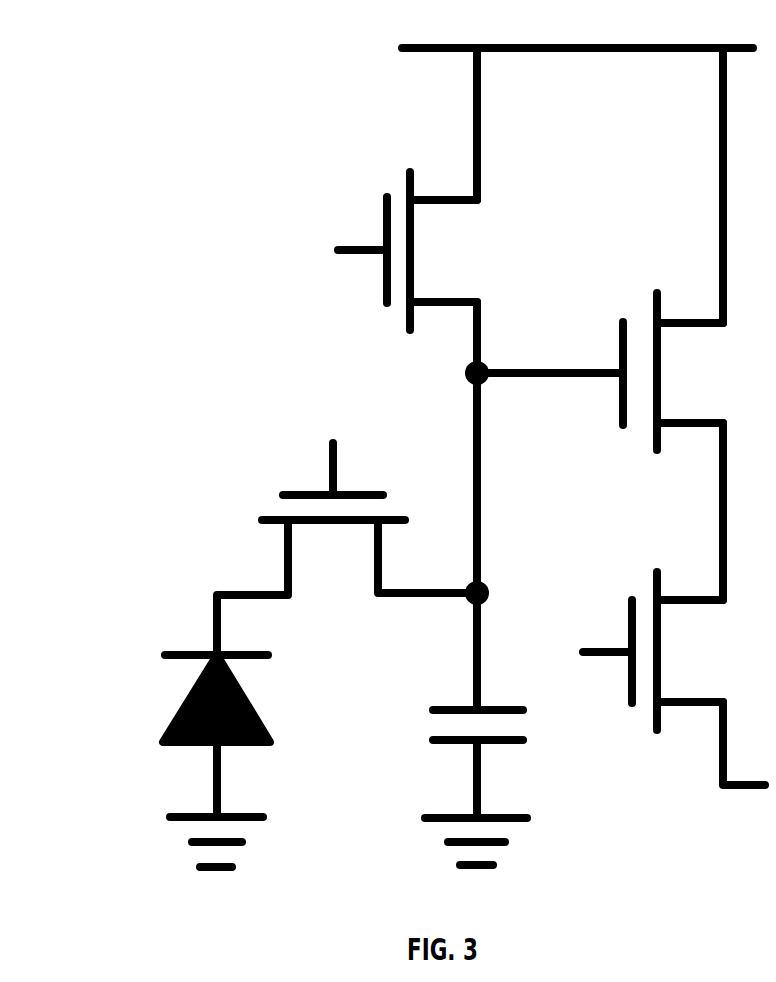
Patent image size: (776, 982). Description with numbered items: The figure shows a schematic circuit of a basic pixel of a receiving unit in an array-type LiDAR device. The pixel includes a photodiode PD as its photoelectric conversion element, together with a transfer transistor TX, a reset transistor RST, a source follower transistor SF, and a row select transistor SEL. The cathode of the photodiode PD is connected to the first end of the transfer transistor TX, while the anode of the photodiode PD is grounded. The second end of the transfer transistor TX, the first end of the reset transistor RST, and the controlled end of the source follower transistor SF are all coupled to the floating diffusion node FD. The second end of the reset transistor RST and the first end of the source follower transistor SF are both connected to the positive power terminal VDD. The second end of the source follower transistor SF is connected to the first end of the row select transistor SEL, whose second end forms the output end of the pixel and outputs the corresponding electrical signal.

The positive power terminal VDD is at (502, 177).
The reset transistor RST is at (317, 251).
The source follower transistor SF is at (600, 400).
The row select transistor SEL is at (654, 633).
The transfer transistor TX is at (347, 503).
The photodiode PD is at (174, 716).
The floating diffusion node FD is at (437, 742).